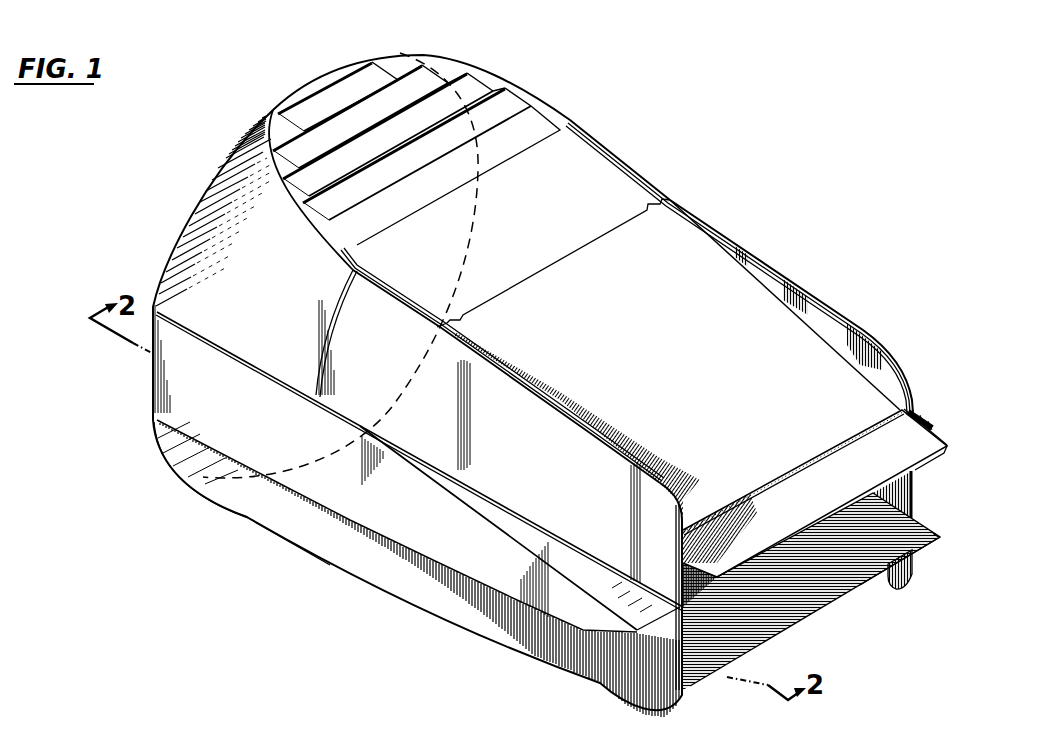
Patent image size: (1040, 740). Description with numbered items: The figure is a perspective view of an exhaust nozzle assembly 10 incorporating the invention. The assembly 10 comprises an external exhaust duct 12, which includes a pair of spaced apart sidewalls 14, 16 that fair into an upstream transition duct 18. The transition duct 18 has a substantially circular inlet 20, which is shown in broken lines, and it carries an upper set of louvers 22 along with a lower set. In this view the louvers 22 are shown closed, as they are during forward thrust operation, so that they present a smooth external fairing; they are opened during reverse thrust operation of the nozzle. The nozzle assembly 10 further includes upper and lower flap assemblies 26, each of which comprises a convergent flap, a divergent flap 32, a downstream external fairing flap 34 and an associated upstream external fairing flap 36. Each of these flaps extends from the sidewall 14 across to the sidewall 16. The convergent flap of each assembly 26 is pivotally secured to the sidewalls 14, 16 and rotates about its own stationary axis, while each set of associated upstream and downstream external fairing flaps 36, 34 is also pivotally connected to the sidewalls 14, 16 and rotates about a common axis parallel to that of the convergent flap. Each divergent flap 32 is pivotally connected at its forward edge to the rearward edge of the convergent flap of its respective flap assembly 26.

The exhaust nozzle assembly 10 is at (796, 150).
The external exhaust duct 12 is at (212, 160).
The sidewall 14 is at (672, 678).
The sidewall 16 is at (912, 490).
The upstream transition duct 18 is at (205, 200).
The circular inlet 20 is at (243, 482).
The upper set of louvers 22 is at (483, 86).
The flap assembly 26 is at (915, 448).
The divergent flap 32 is at (912, 436).
The downstream external fairing flap 34 is at (757, 293).
The upstream external fairing flap 36 is at (613, 173).